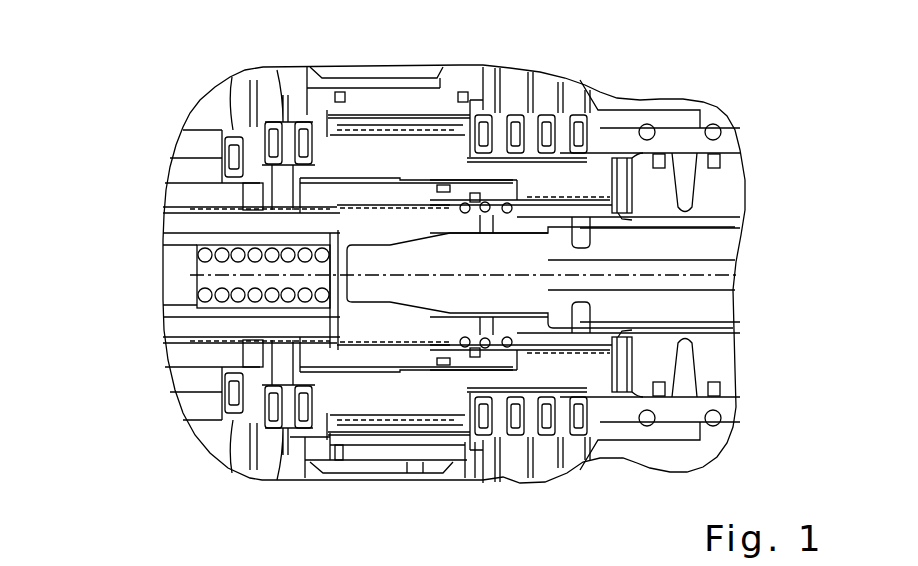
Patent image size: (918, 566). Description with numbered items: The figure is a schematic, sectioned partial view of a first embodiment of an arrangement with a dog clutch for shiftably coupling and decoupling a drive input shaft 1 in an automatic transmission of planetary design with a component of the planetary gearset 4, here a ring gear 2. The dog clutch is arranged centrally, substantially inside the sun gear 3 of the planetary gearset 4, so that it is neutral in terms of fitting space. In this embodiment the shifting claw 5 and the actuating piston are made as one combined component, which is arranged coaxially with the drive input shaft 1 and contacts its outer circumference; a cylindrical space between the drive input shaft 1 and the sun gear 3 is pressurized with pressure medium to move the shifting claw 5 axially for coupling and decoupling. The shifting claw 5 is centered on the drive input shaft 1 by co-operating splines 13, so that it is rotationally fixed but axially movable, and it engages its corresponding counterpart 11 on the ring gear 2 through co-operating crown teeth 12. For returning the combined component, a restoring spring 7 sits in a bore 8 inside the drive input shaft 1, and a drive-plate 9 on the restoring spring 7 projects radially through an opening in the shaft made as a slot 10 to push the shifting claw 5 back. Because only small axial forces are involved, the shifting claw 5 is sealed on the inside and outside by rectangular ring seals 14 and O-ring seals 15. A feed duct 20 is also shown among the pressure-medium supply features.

The drive input shaft 1 is at (247, 327).
The ring gear 2 is at (278, 470).
The sun gear 3 is at (418, 152).
The planetary gearset 4 is at (508, 60).
The shifting claw 5 is at (355, 188).
The restoring spring 7 is at (207, 300).
The bore 8 is at (247, 283).
The drive-plate 9 is at (330, 235).
The slot 10 is at (297, 222).
The counterpart component 11 is at (275, 192).
The crown teeth 12 is at (293, 188).
The splines 13 is at (405, 205).
The rectangular ring seals 14 is at (471, 357).
The O-ring seals 15 is at (430, 177).
The feed duct 20 is at (620, 267).